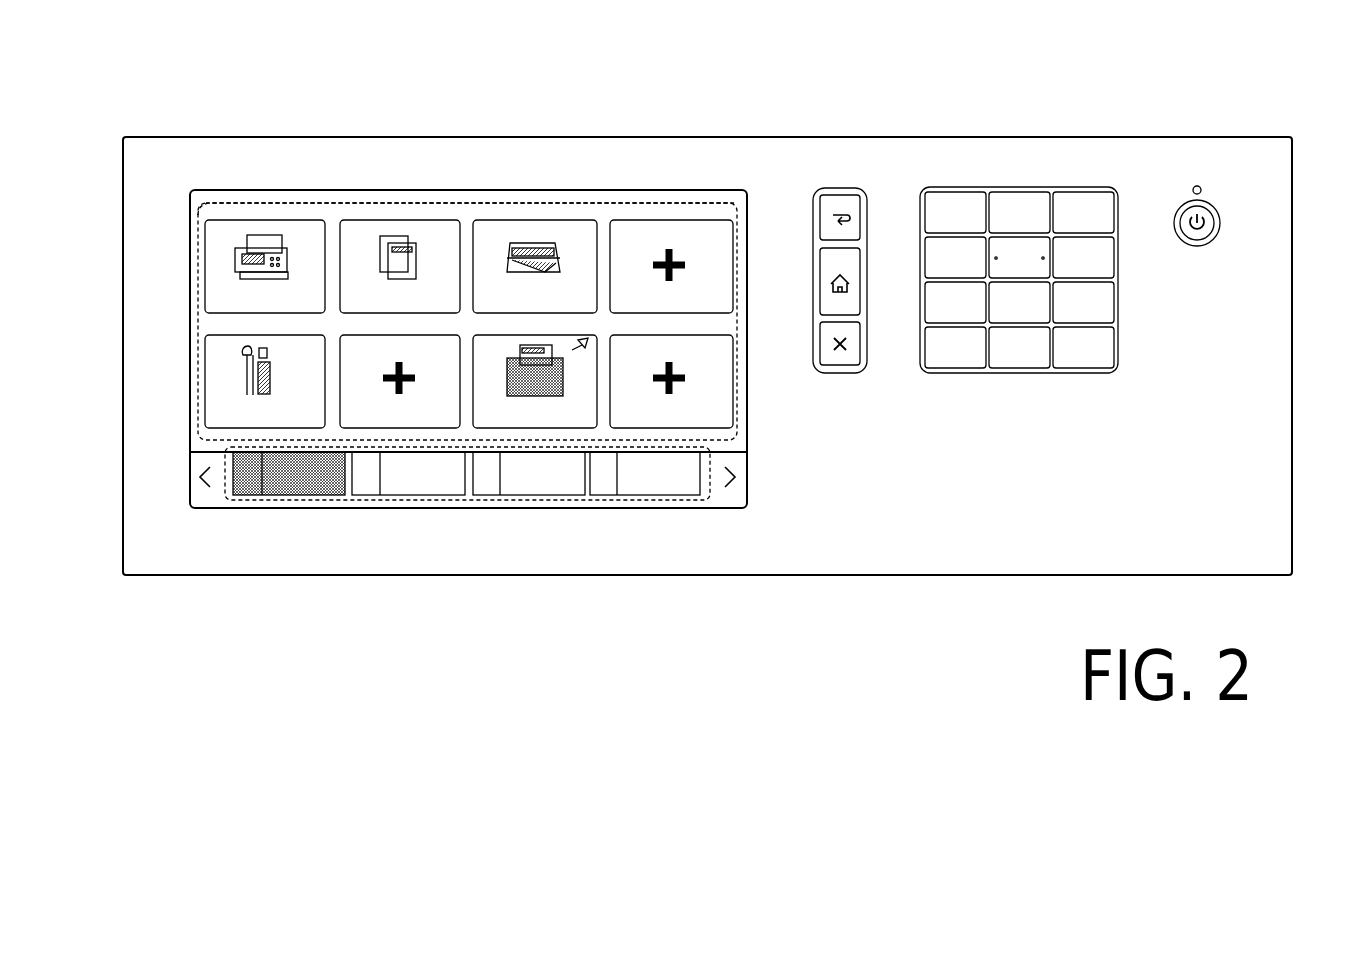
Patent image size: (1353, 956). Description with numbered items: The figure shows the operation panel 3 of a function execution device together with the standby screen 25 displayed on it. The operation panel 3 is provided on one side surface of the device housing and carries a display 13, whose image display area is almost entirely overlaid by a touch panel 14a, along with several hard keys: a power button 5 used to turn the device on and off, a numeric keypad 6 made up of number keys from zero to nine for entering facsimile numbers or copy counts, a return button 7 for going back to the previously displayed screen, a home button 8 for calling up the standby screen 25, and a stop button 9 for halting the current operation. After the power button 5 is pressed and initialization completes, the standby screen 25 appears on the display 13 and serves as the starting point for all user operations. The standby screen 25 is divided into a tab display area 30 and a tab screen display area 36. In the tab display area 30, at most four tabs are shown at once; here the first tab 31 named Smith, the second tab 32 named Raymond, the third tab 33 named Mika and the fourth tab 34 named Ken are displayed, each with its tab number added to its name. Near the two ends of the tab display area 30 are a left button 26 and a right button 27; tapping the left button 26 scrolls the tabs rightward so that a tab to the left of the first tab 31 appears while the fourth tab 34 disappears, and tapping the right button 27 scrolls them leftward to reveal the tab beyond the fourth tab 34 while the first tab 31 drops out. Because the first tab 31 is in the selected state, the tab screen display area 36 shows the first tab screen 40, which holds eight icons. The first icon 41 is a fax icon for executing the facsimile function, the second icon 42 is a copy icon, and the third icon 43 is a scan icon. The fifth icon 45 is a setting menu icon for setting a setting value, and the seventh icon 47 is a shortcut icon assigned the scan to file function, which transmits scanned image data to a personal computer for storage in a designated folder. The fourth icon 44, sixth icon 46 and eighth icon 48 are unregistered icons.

The operation panel 3 is at (1252, 137).
The power button 5 is at (1222, 222).
The numeric keypad 6 is at (1090, 180).
The return button 7 is at (840, 195).
The home button 8 is at (865, 295).
The stop button 9 is at (850, 365).
The display 13 is at (468, 283).
The touch panel 14a is at (686, 188).
The standby screen 25 is at (742, 185).
The left button 26 is at (204, 483).
The right button 27 is at (732, 500).
The tab display area 30 is at (203, 458).
The first tab 31 is at (280, 500).
The second tab 32 is at (405, 500).
The third tab 33 is at (518, 500).
The fourth tab 34 is at (640, 500).
The tab screen display area 36 is at (198, 205).
The first tab screen 40 is at (232, 216).
The first icon 41 is at (300, 230).
The second icon 42 is at (362, 232).
The third icon 43 is at (500, 232).
The fourth icon 44 is at (620, 230).
The fifth icon 45 is at (215, 385).
The sixth icon 46 is at (360, 335).
The seventh icon 47 is at (520, 340).
The eighth icon 48 is at (725, 388).